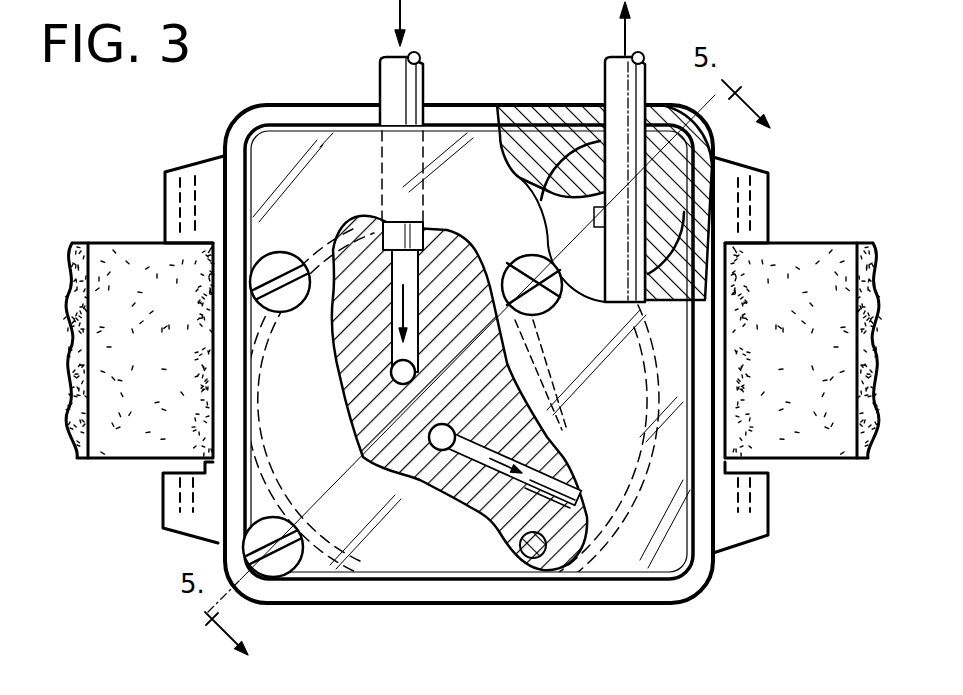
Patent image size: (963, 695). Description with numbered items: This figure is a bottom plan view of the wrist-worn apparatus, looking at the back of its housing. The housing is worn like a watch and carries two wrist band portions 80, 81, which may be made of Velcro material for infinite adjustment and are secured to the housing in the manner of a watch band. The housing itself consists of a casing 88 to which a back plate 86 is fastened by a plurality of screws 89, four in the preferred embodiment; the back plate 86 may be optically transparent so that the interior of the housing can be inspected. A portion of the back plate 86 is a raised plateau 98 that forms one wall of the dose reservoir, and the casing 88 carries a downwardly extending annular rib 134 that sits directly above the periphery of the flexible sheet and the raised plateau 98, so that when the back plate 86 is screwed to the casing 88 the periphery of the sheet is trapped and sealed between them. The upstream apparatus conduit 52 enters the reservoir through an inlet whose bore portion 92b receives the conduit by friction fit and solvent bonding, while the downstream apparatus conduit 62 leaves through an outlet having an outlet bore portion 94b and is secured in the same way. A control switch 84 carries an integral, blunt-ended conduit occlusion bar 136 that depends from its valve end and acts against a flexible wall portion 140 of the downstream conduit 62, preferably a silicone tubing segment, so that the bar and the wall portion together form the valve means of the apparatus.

The upstream apparatus conduit 52 is at (423, 68).
The downstream apparatus conduit 62 is at (604, 72).
The wrist band portion 80 is at (130, 260).
The wrist band portion 81 is at (815, 260).
The control switch 84 is at (535, 115).
The back plate 86 is at (275, 128).
The casing 88 is at (345, 105).
The screws 89 is at (278, 260).
The bore portion 92b is at (397, 370).
The outlet bore portion 94b is at (440, 452).
The raised plateau 98 is at (478, 520).
The annular rib 134 is at (255, 470).
The conduit occlusion bar 136 is at (600, 270).
The flexible wall portion 140 is at (677, 185).